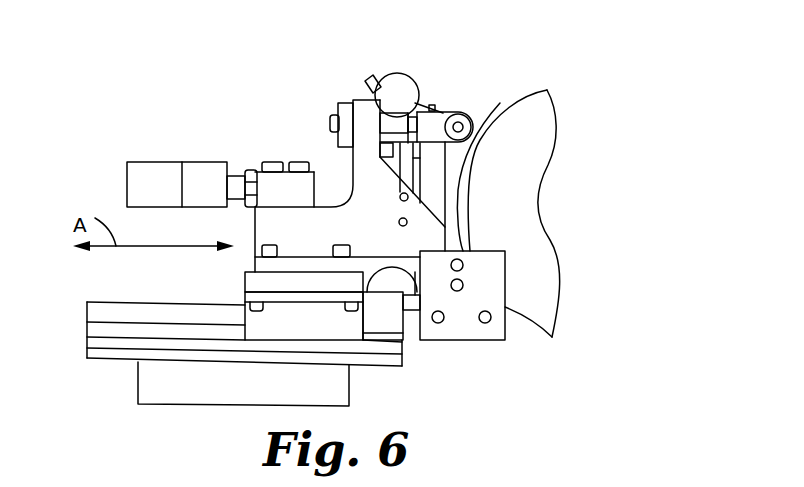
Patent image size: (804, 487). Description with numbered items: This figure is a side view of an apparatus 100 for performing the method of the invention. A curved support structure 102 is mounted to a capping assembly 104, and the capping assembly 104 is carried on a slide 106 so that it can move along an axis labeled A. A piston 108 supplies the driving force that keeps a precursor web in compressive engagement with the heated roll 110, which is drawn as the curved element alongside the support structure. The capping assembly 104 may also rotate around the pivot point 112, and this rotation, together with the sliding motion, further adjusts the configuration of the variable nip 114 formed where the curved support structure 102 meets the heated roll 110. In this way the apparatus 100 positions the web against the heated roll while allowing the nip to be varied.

The apparatus 100 is at (562, 44).
The curved support structure 102 is at (443, 152).
The capping assembly 104 is at (357, 193).
The slide 106 is at (97, 355).
The piston 108 is at (149, 170).
The heated roll 110 is at (537, 120).
The pivot point 112 is at (459, 291).
The variable nip 114 is at (490, 106).